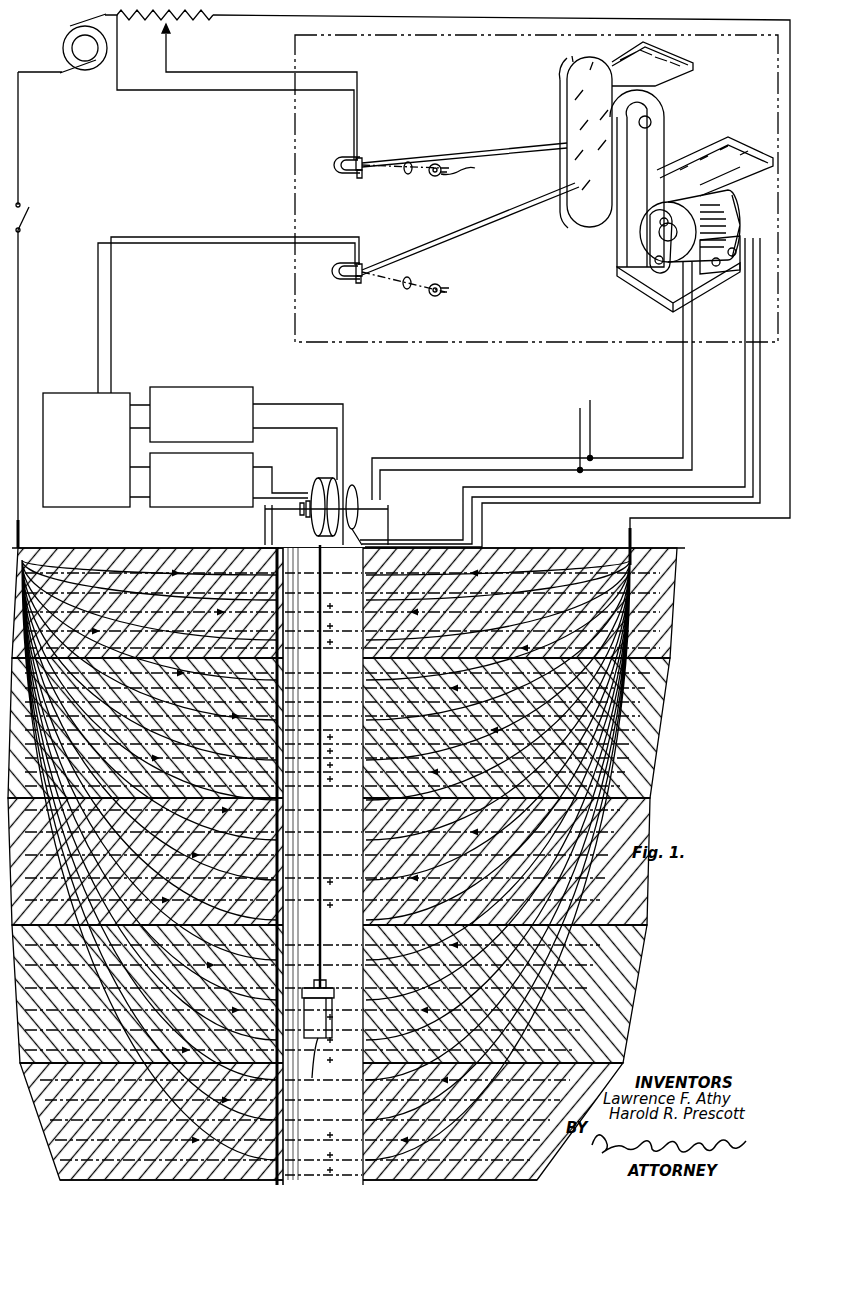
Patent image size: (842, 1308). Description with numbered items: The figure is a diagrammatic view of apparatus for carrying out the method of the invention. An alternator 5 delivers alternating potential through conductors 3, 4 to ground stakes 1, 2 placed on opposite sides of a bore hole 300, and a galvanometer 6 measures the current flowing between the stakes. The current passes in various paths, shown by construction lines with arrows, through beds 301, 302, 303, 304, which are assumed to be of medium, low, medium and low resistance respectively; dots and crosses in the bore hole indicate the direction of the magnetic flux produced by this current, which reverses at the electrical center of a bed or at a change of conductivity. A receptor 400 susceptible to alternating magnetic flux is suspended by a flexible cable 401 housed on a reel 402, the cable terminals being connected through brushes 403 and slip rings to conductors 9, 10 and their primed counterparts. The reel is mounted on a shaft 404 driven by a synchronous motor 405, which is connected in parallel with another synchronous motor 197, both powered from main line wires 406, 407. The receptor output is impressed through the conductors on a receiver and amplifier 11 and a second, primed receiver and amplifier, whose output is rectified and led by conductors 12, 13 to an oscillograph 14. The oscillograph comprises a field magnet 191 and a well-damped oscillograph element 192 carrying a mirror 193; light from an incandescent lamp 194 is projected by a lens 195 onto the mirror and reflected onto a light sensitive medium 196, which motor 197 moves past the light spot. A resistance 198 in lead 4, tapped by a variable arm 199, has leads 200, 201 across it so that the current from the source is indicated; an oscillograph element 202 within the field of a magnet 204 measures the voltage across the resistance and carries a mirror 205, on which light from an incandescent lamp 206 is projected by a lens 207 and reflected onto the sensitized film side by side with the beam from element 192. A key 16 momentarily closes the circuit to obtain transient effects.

The ground stake 1 is at (21, 538).
The ground stake 2 is at (633, 546).
The conductor 3 is at (22, 158).
The conductor 4 is at (278, 20).
The alternator 5 is at (86, 62).
The galvanometer 6 is at (338, 155).
The conductor 9 is at (333, 402).
The conductor 10 is at (296, 428).
The receiver and amplifier 11 is at (204, 386).
The conductor 12 is at (97, 378).
The conductor 13 is at (112, 340).
The oscillograph 14 is at (334, 277).
The key 16 is at (31, 210).
The field magnet 191 is at (350, 281).
The oscillograph element 192 is at (362, 280).
The mirror 193 is at (469, 229).
The incandescent lamp 194 is at (440, 297).
The lens 195 is at (406, 290).
The light sensitive medium 196 is at (580, 215).
The electric motor 197 is at (567, 368).
The resistance 198 is at (148, 22).
The variable arm 199 is at (170, 48).
The lead 200 is at (345, 72).
The lead 201 is at (264, 92).
The oscillograph element 202 is at (362, 174).
The magnet 204 is at (356, 160).
The mirror 205 is at (464, 153).
The incandescent lamp 206 is at (464, 166).
The lens 207 is at (408, 175).
The bore hole 300 is at (368, 1126).
The bed 301 is at (670, 616).
The bed 302 is at (668, 734).
The bed 303 is at (630, 900).
The bed 304 is at (640, 1000).
The receptor 400 is at (320, 1035).
The flexible cable 401 is at (324, 862).
The reel 402 is at (313, 492).
The brushes 403 is at (350, 485).
The shaft 404 is at (296, 516).
The synchronous motor 405 is at (395, 535).
The main line wire 406 is at (565, 440).
The main line wire 407 is at (592, 432).